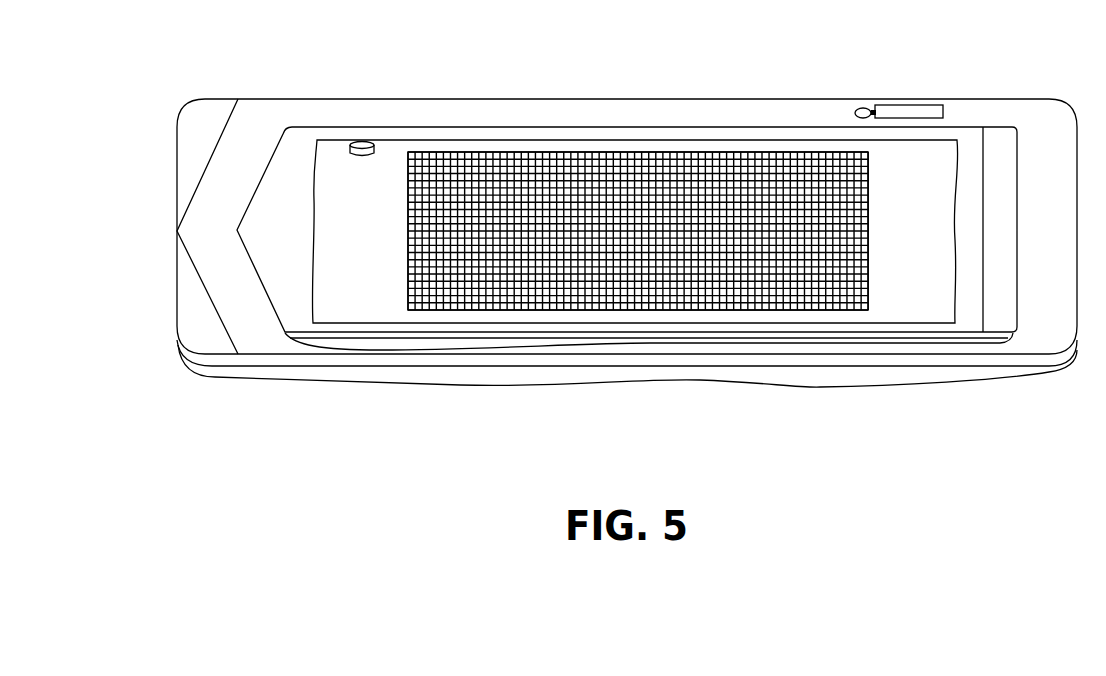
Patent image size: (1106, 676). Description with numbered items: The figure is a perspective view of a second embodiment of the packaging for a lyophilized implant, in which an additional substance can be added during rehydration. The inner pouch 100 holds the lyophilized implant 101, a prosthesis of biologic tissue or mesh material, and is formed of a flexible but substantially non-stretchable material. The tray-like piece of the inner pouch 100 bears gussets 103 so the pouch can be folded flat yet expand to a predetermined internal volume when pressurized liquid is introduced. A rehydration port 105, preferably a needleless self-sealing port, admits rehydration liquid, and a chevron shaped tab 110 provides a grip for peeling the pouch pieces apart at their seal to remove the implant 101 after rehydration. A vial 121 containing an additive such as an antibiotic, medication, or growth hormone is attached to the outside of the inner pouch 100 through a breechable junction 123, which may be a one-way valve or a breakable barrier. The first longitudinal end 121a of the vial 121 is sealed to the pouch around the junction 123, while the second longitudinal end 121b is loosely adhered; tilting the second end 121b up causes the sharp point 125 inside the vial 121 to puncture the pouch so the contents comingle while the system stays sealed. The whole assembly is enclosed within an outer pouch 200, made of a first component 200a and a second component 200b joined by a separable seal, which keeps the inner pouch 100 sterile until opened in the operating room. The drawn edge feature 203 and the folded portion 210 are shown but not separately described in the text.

The inner pouch 100 is at (1002, 280).
The implant 101 is at (458, 244).
The gussets 103 is at (838, 340).
The rehydration port 105 is at (362, 141).
The chevron shaped tab 110 is at (267, 208).
The vial 121 is at (933, 100).
The first longitudinal end 121a is at (895, 103).
The second longitudinal end 121b is at (952, 110).
The breechable junction 123 is at (862, 108).
The sharp point 125 is at (877, 114).
The outer pouch 200 is at (198, 338).
The first component 200a is at (445, 370).
The second component 200b is at (272, 340).
The base bottom edge 203 is at (765, 375).
The flexible portion 210 is at (202, 228).